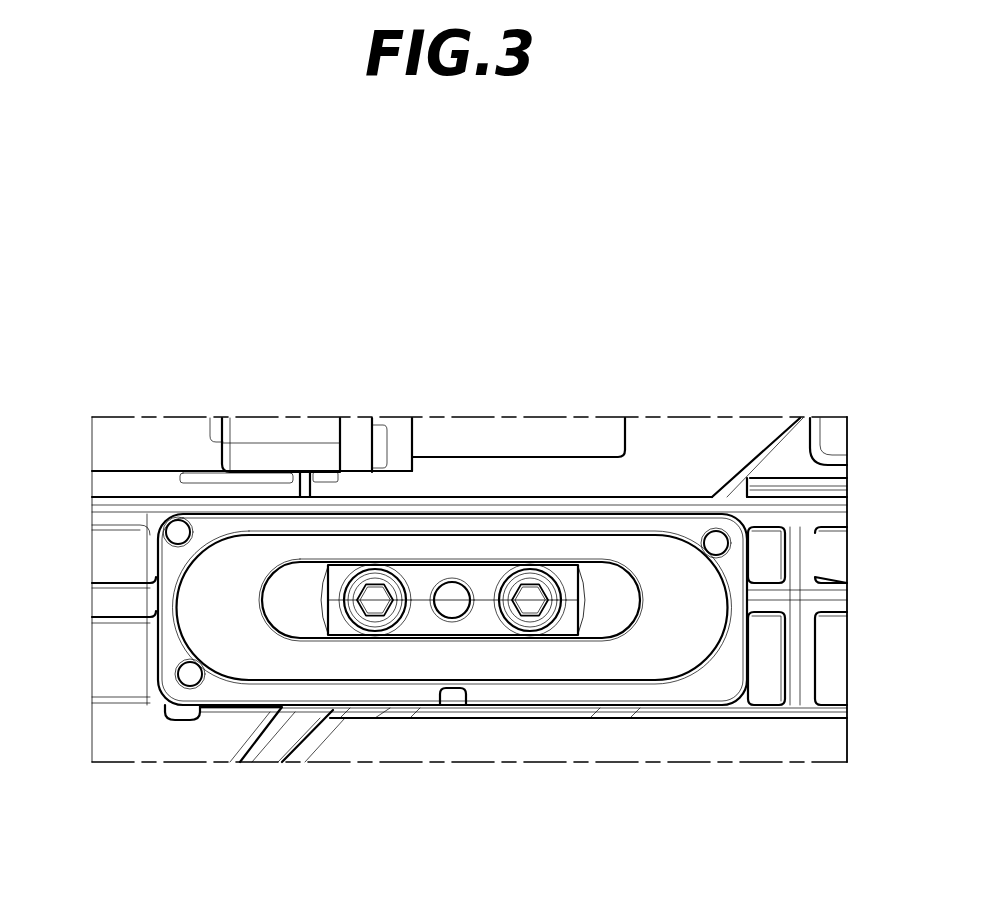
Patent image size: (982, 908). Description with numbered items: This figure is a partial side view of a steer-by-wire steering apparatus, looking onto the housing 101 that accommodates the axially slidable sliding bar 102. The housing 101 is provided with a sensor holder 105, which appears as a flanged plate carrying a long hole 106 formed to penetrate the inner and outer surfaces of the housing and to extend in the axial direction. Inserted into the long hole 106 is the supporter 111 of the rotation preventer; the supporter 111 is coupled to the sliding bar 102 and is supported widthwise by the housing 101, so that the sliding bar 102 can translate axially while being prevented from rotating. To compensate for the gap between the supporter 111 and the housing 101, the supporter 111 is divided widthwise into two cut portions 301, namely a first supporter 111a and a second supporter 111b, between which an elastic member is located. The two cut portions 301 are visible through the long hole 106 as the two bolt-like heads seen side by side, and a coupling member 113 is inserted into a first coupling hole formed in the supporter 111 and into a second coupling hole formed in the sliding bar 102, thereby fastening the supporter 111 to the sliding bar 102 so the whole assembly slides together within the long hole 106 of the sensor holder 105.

The housing 101 is at (122, 562).
The sliding bar 102 is at (615, 595).
The sensor holder 105 is at (170, 650).
The long hole 106 is at (304, 601).
The supporter 111 is at (452, 619).
The first supporter 111a is at (487, 587).
The second supporter 111b is at (420, 625).
The coupling member 113 is at (528, 596).
The cut portions 301 is at (417, 598).